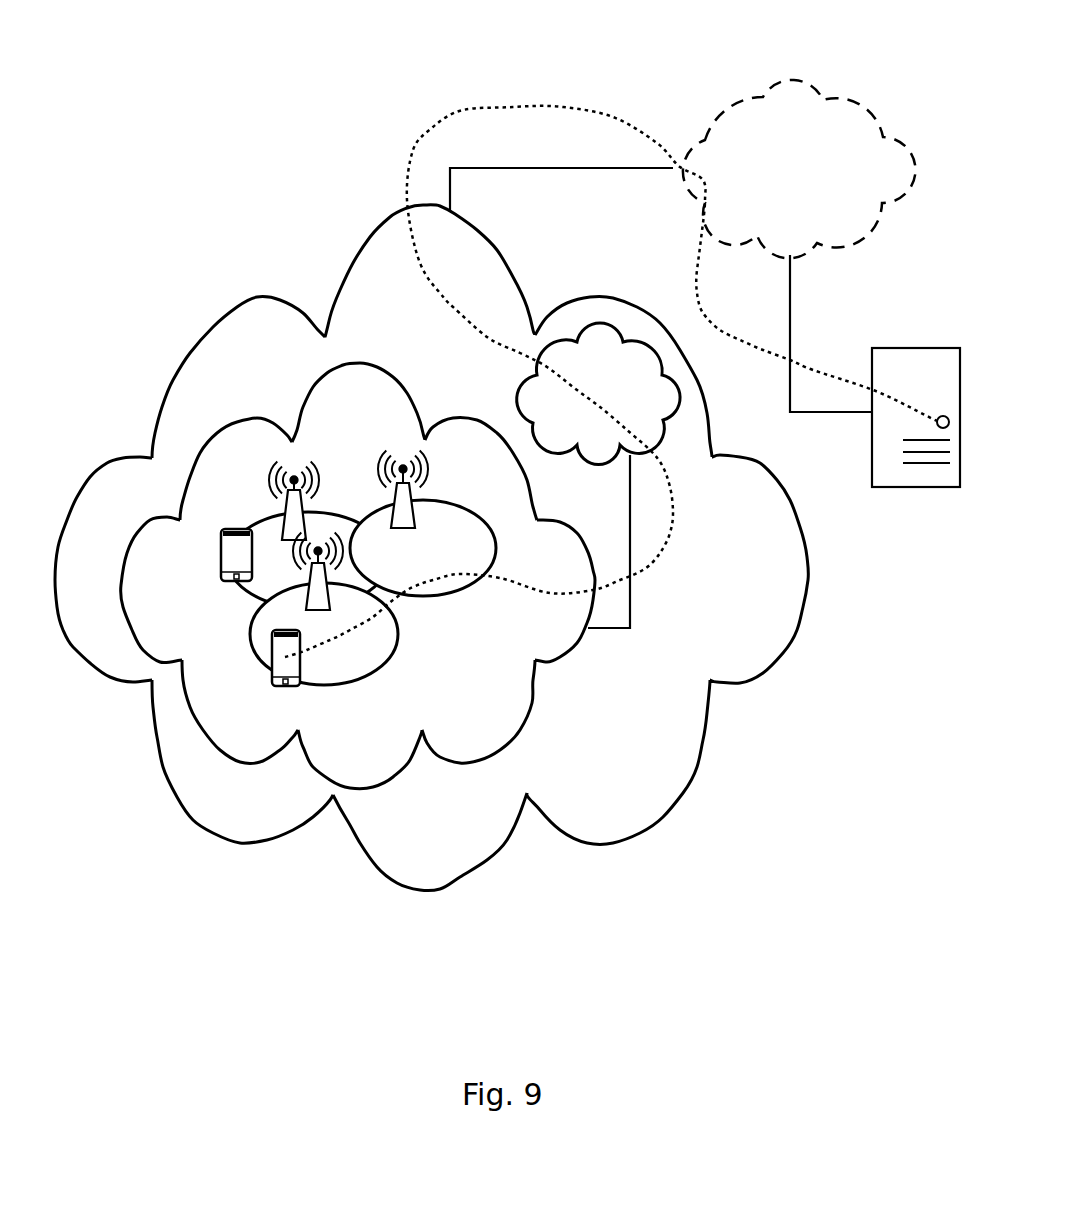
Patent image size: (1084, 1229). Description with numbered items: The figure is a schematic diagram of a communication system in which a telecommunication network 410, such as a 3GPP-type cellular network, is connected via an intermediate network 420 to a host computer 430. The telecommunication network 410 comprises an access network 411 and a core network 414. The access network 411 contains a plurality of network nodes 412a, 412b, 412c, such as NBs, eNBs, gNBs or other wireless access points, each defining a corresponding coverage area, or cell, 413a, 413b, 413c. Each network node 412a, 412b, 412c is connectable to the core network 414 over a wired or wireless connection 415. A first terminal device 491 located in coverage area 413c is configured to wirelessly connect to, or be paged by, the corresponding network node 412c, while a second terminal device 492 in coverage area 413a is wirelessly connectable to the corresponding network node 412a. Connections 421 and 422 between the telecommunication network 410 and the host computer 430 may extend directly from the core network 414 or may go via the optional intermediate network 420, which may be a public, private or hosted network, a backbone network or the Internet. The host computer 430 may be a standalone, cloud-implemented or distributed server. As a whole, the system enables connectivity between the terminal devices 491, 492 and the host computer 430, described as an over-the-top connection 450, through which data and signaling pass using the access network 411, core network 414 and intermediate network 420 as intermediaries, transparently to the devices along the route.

The telecommunication network 410 is at (419, 319).
The access network 411 is at (377, 429).
The network node 412a is at (373, 760).
The network node 412b is at (412, 483).
The network node 412c is at (268, 490).
The coverage area 413a is at (396, 600).
The coverage area 413b is at (463, 593).
The coverage area 413c is at (272, 518).
The core network 414 is at (626, 374).
The connection 415 is at (633, 593).
The intermediate network 420 is at (814, 184).
The connection 421 is at (577, 167).
The connection 422 is at (827, 415).
The host computer 430 is at (937, 490).
The OTT connection 450 is at (428, 128).
The first terminal device 491 is at (222, 580).
The second terminal device 492 is at (273, 690).